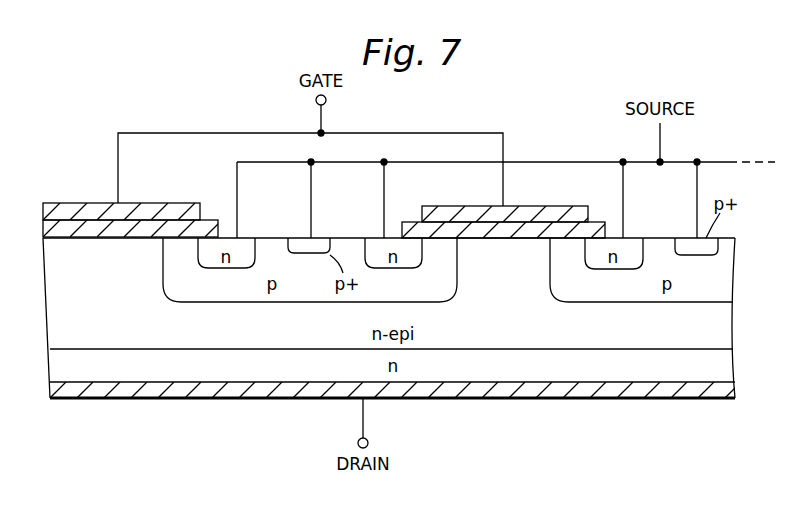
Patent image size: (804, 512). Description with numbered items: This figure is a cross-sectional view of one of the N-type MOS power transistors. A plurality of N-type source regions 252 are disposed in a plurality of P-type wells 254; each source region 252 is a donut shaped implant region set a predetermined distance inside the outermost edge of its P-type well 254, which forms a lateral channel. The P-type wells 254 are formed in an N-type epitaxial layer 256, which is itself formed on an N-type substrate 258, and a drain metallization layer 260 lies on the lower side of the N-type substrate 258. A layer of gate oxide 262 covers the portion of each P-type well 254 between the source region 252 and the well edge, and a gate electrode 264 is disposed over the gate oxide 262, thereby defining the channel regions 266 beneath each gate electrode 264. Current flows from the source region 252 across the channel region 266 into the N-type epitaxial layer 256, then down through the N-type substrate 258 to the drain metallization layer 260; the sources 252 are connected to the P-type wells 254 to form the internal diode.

The N-type source regions 252 is at (246, 237).
The P-type wells 254 is at (455, 300).
The N-type epitaxial layer 256 is at (278, 341).
The N-type substrate 258 is at (106, 357).
The drain metallization layer 260 is at (81, 394).
The gate oxide 262 is at (214, 221).
The gate electrode 264 is at (63, 203).
The channel regions 266 is at (163, 250).